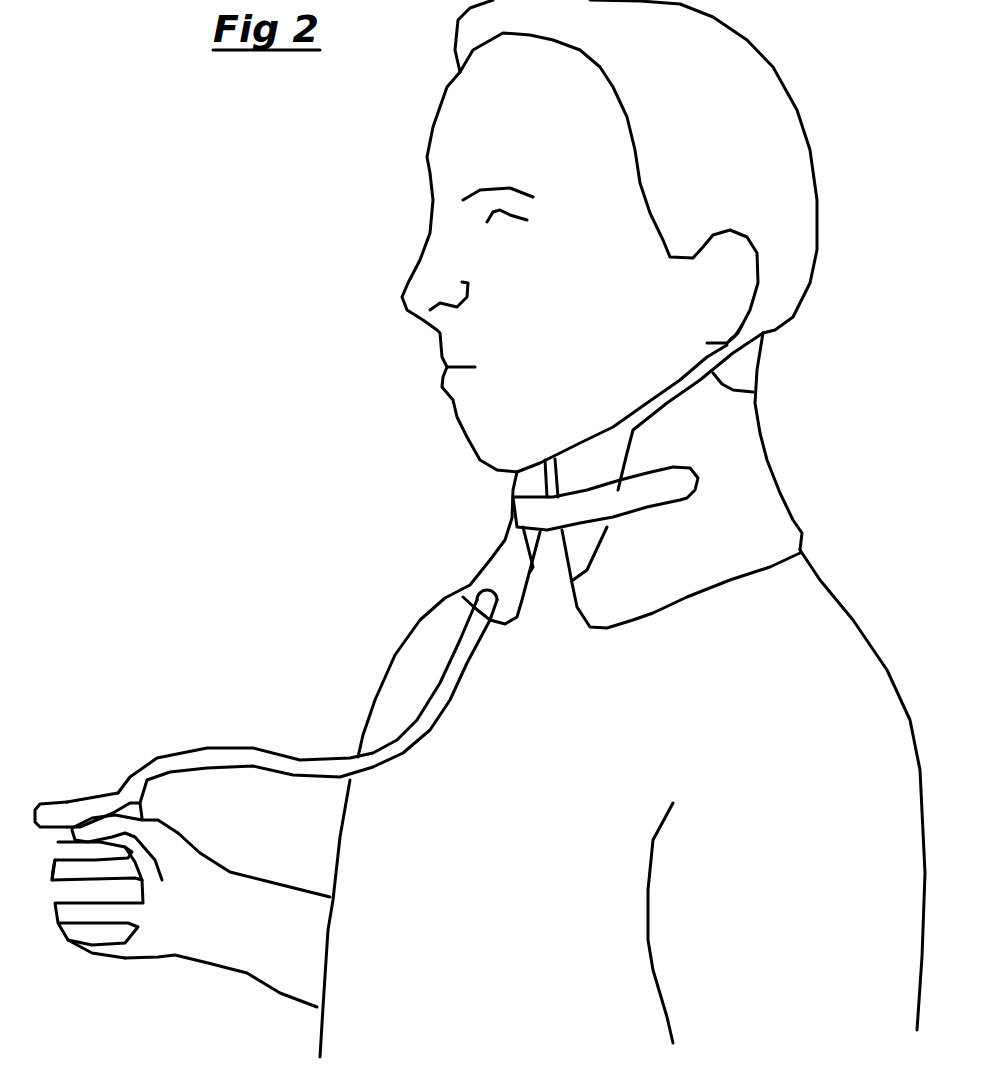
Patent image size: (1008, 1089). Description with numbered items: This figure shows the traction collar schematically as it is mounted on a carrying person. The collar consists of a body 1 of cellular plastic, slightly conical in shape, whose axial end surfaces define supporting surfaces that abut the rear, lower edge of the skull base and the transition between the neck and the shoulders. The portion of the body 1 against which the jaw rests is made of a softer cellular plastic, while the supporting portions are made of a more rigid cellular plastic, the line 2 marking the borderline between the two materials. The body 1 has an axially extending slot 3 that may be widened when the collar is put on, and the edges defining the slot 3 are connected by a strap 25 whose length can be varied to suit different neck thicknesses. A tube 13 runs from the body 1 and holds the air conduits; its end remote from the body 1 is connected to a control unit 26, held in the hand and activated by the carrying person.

The body 1 is at (767, 447).
The line 2 is at (757, 392).
The slot 3 is at (553, 603).
The tube 13 is at (433, 693).
The strap 25 is at (543, 512).
The control unit 26 is at (105, 779).